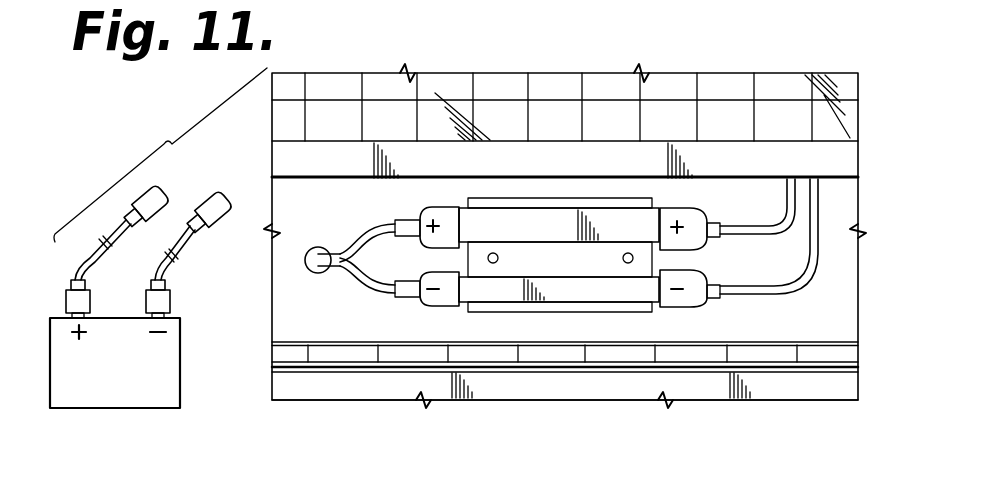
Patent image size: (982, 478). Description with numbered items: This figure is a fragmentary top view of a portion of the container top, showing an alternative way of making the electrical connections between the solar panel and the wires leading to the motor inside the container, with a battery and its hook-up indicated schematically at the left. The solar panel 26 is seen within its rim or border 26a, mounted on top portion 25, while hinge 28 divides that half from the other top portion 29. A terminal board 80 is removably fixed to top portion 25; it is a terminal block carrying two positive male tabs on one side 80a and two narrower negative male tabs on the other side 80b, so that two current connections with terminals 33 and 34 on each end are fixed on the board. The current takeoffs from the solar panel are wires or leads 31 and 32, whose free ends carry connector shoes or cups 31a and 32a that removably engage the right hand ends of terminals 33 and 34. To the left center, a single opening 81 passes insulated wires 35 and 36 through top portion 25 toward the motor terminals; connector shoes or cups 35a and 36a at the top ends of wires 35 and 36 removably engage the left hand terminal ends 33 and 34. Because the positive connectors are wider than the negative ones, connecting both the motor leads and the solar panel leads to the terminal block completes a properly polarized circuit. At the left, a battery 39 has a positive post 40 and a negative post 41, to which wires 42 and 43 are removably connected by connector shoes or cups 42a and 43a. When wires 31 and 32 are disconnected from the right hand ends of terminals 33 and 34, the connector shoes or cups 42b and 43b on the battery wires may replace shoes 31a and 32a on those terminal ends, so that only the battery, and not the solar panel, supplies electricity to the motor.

The solar panel 26 is at (666, 79).
The rim or border of panel 26a is at (548, 156).
The top portion 25 is at (641, 333).
The hinge 28 is at (771, 353).
The top portion 29 is at (521, 388).
The terminal board 80 is at (551, 249).
The positive side of terminal block 80a is at (610, 183).
The negative side of terminal block 80b is at (598, 312).
The terminal 33 is at (465, 200).
The terminal 34 is at (463, 310).
The insulated wire 35 is at (365, 228).
The connector shoe or cup 35a is at (436, 215).
The insulated wire 36 is at (358, 273).
The connector shoe or cup 36a is at (422, 300).
The single opening 81 is at (318, 248).
The wire or lead 31 is at (786, 205).
The connector shoe or cup 31a is at (703, 215).
The wire or lead 32 is at (786, 294).
The connector shoe or cup 32a is at (698, 282).
The battery 39 is at (131, 402).
The positive post 40 is at (84, 316).
The negative post 41 is at (162, 315).
The wire 42 is at (85, 272).
The connector shoe or cup 42a is at (66, 297).
The connector shoe or cup 42b is at (162, 196).
The wire 43 is at (183, 256).
The connector shoe or cup 43a is at (170, 300).
The connector shoe or cup 43b is at (214, 208).